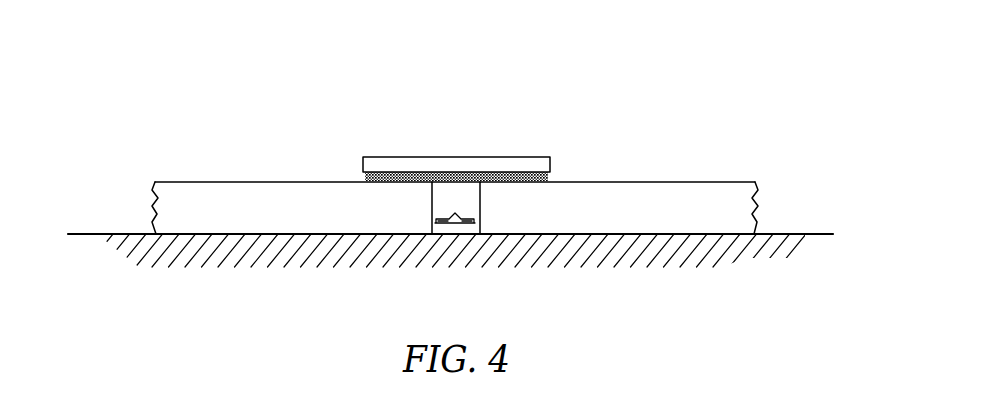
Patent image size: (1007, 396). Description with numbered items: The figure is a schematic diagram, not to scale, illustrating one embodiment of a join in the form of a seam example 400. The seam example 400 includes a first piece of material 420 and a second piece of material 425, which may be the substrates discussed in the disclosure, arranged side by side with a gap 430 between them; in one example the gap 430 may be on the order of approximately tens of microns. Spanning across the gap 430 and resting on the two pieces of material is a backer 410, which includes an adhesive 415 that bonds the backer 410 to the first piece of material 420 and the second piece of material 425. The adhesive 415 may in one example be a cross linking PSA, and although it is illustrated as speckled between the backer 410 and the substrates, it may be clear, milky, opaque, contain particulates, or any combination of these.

The seam example 400 is at (226, 76).
The backer 410 is at (483, 162).
The adhesive 415 is at (365, 178).
The first piece of material 420 is at (248, 193).
The second piece of material 425 is at (683, 192).
The gap 430 is at (453, 213).